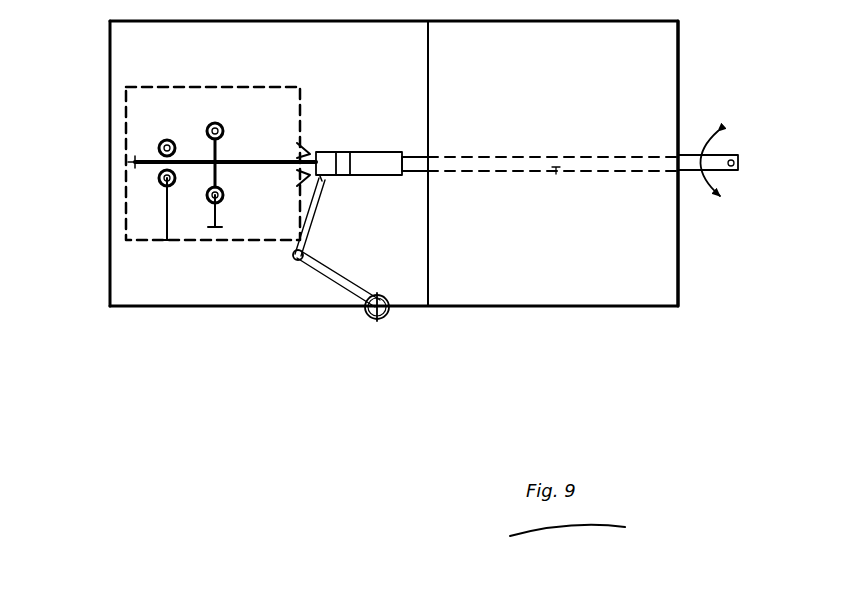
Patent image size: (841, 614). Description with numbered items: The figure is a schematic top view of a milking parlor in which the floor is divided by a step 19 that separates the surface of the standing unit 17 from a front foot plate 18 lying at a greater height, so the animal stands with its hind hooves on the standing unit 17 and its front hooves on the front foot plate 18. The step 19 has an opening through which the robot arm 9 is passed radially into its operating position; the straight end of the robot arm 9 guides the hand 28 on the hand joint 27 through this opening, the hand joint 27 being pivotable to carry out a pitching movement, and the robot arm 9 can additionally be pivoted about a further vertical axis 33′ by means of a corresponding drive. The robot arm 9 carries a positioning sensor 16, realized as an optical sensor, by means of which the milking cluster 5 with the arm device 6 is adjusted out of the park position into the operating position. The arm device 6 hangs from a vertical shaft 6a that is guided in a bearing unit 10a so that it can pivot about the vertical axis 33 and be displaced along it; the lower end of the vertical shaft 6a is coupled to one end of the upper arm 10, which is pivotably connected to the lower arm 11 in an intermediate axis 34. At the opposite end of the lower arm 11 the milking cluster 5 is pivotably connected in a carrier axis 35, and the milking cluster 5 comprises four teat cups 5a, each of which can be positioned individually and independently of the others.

The milking cluster 5 is at (186, 246).
The teat cups 5a is at (208, 127).
The arm device 6 is at (303, 280).
The vertical shaft 6a is at (387, 320).
The robot arm 9 is at (548, 136).
The upper arm 10 is at (325, 283).
The bearing unit 10a is at (375, 320).
The lower arm 11 is at (285, 225).
The positioning sensor 16 is at (323, 152).
The standing unit 17 is at (150, 267).
The front foot plate 18 is at (633, 268).
The step 19 is at (432, 253).
The hand joint 27 is at (397, 150).
The hand 28 is at (366, 176).
The vertical axis 33 is at (363, 320).
The further vertical axis 33′ is at (731, 168).
The intermediate axis 34 is at (295, 262).
The carrier axis 35 is at (327, 188).